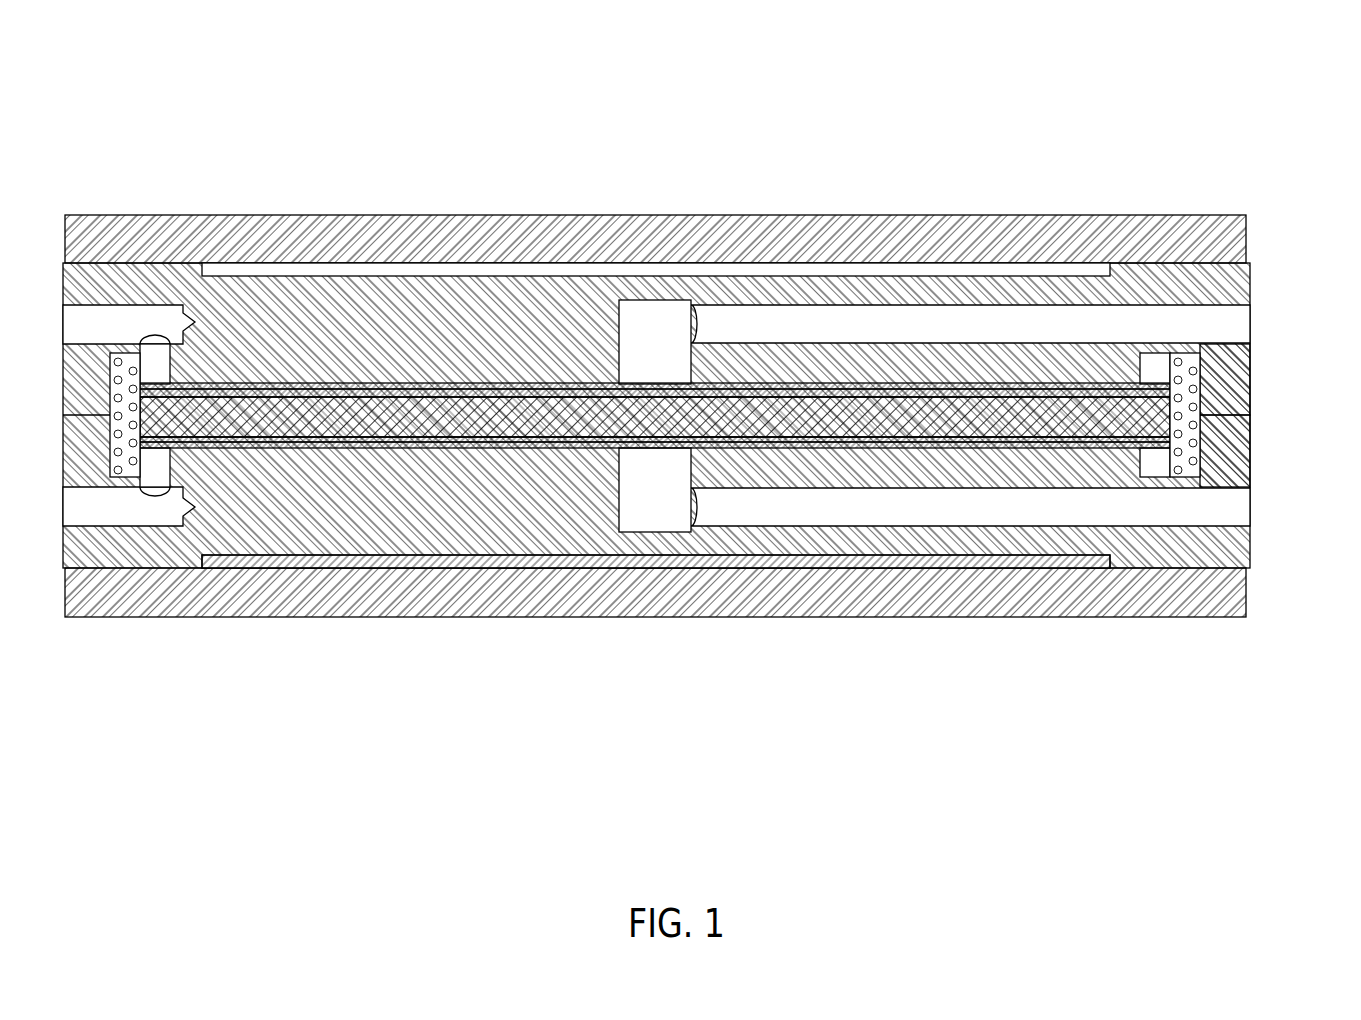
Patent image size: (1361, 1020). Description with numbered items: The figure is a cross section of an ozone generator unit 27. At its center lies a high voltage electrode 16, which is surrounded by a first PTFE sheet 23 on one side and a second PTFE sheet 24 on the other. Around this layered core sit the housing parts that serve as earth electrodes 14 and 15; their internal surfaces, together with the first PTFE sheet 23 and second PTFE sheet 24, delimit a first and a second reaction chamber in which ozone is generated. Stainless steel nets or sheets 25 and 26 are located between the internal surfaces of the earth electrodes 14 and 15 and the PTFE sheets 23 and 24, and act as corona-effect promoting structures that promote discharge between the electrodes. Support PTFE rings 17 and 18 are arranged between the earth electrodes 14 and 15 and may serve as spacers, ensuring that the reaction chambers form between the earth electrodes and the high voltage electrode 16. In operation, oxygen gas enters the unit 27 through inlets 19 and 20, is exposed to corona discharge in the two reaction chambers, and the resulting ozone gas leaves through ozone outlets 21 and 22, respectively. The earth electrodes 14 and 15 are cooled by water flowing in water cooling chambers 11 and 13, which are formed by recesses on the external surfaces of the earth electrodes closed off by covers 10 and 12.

The cover 10 is at (802, 243).
The water cooling chamber 11 is at (882, 273).
The cover 12 is at (716, 592).
The water cooling chamber 13 is at (599, 570).
The earth electrode 14 is at (1224, 378).
The earth electrode 15 is at (1227, 447).
The high voltage electrode 16 is at (211, 422).
The support PTFE ring 17 is at (131, 452).
The support PTFE ring 18 is at (1184, 460).
The inlet 19 is at (104, 328).
The inlet 20 is at (91, 507).
The ozone outlet 21 is at (1052, 323).
The ozone outlet 22 is at (1221, 509).
The first PTFE sheet 23 is at (426, 391).
The second PTFE sheet 24 is at (431, 447).
The stainless steel net or sheet 25 is at (333, 387).
The stainless steel net or sheet 26 is at (333, 440).
The ozone generator unit 27 is at (715, 148).